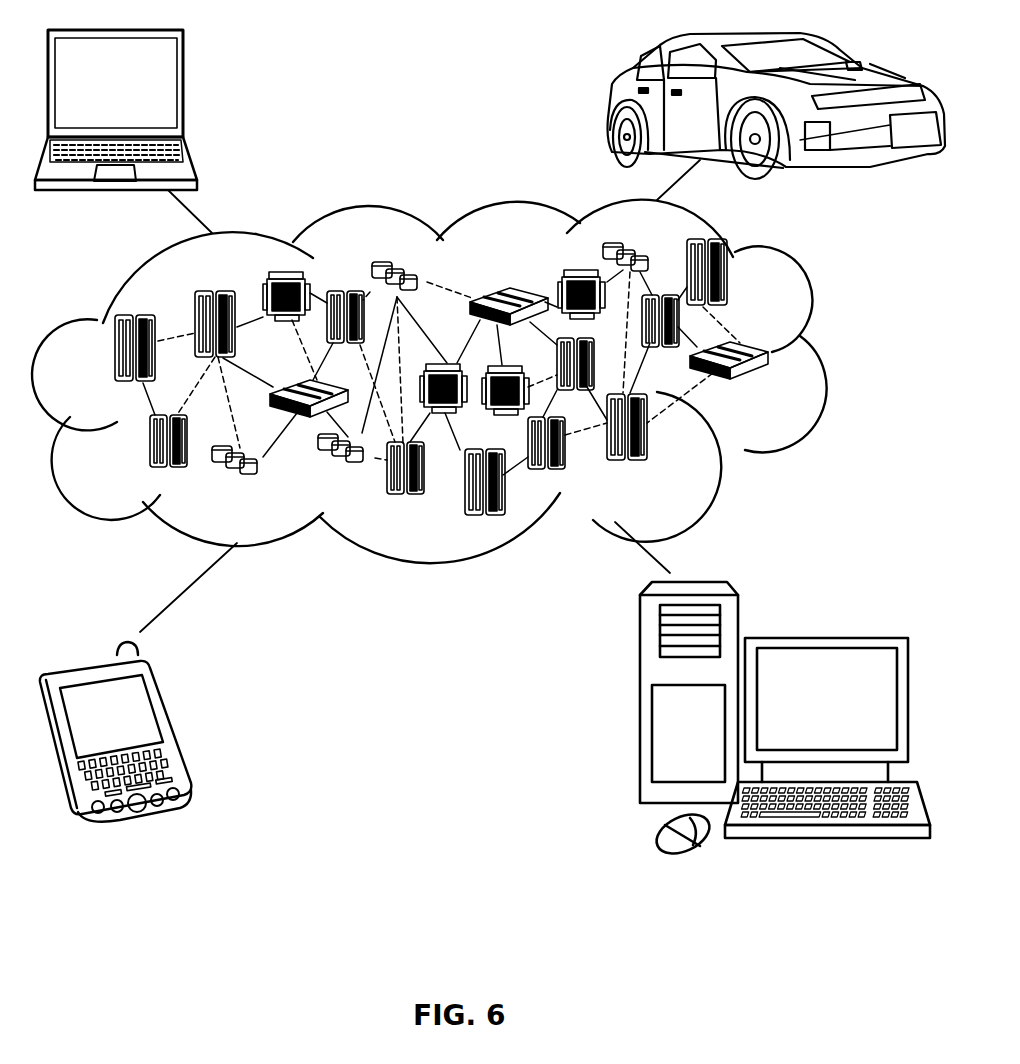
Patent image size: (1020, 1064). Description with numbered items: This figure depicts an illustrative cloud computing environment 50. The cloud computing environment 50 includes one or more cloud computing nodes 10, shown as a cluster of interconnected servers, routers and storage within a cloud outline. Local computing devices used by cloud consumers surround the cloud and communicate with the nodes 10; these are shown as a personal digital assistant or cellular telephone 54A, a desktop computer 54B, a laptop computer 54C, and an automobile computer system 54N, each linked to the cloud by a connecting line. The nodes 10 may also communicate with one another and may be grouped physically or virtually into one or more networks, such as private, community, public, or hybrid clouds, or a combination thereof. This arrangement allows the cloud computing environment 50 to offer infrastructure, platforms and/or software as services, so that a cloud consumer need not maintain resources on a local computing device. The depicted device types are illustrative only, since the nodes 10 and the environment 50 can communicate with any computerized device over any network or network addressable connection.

The cloud computing environment 50 is at (822, 357).
The cloud computing node 10 is at (775, 388).
The personal digital assistant or cellular telephone 54A is at (173, 730).
The desktop computer 54B is at (822, 638).
The laptop computer 54C is at (183, 90).
The automobile computer system 54N is at (612, 100).